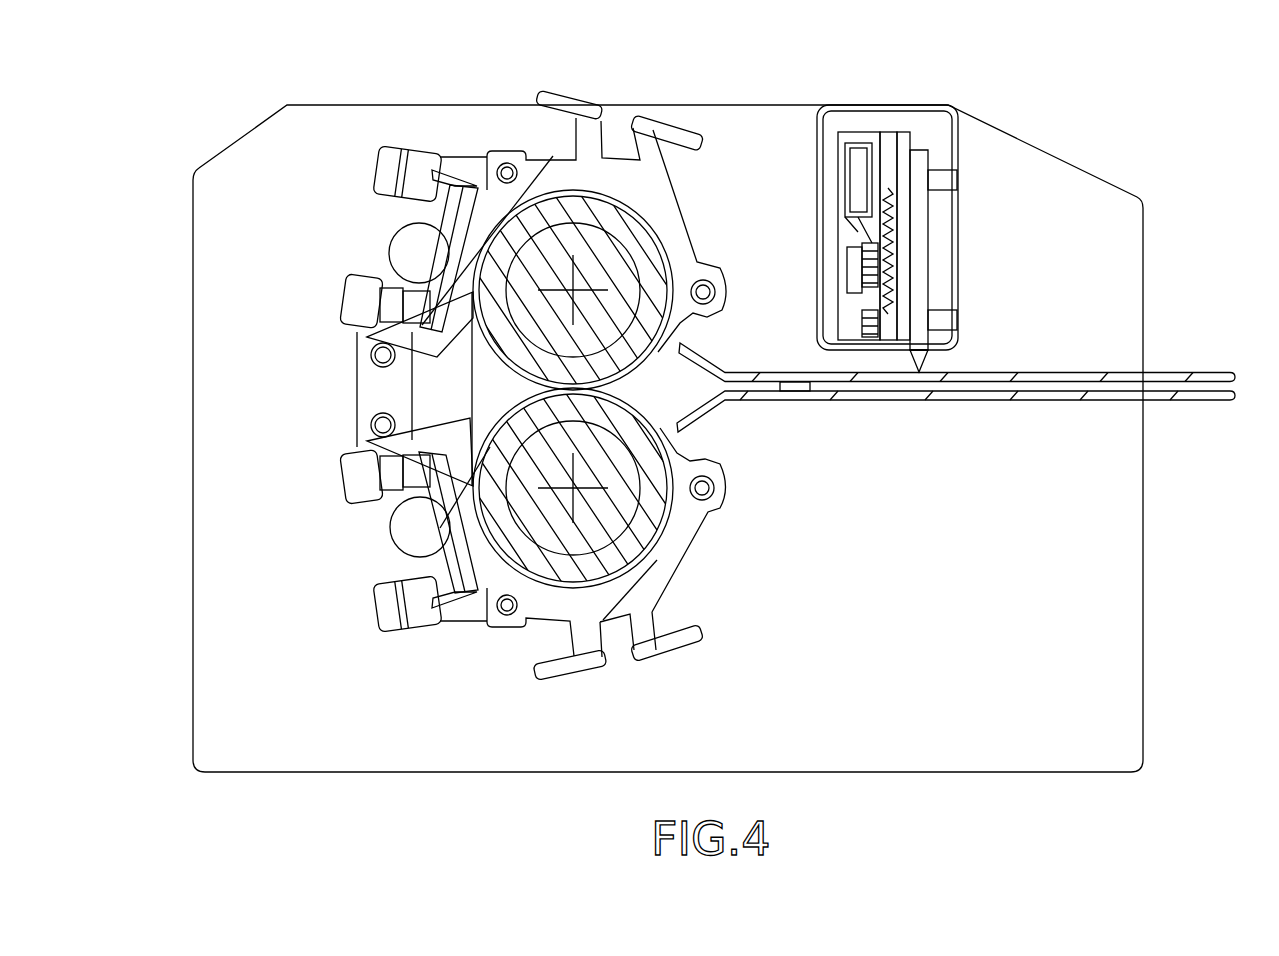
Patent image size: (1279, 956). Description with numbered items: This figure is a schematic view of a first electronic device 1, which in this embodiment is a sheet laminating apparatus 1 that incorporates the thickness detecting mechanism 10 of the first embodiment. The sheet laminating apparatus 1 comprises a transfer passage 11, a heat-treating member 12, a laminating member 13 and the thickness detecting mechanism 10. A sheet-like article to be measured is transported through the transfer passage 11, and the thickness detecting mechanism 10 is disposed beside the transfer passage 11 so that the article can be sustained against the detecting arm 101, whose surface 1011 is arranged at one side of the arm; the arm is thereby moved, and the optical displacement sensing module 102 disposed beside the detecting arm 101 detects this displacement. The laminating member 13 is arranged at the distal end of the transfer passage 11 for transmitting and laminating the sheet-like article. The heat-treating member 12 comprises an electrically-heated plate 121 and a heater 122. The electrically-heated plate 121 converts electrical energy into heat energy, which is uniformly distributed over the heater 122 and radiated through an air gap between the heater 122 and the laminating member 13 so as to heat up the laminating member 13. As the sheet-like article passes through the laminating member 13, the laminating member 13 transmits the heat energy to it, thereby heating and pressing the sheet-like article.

The first electronic device 1 is at (698, 46).
The thickness detecting mechanism 10 is at (930, 138).
The detecting arm 101 is at (920, 243).
The surface 1011 is at (910, 277).
The optical displacement sensing module 102 is at (878, 123).
The transfer passage 11 is at (1117, 392).
The heat-treating member 12 is at (557, 170).
The electrically-heated plate 121 is at (455, 175).
The heater 122 is at (652, 200).
The laminating member 13 is at (623, 297).